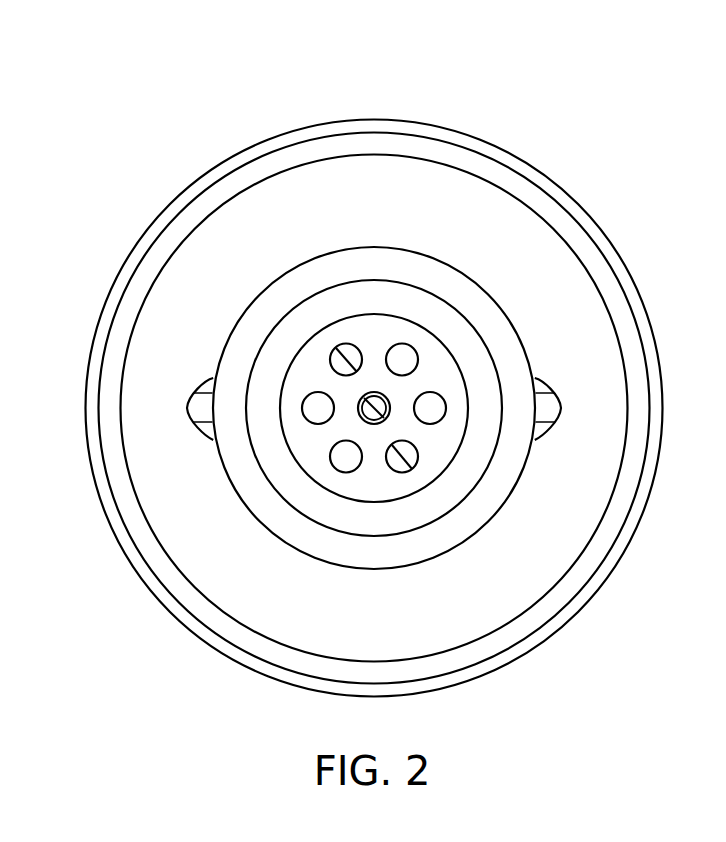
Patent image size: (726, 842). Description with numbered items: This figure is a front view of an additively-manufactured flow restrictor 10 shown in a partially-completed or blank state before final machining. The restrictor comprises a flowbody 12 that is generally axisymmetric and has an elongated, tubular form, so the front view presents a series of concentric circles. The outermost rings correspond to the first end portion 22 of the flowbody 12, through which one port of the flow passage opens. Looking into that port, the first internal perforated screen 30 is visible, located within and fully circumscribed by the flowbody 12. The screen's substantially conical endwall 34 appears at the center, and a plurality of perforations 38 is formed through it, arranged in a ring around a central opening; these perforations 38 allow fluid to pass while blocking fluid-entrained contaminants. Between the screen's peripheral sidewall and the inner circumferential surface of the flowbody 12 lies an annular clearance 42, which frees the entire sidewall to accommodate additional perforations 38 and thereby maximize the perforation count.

The additively-manufactured flow restrictor 10 is at (145, 132).
The flowbody 12 is at (515, 657).
The first end portion 22 is at (562, 249).
The first internal perforated screen 30 is at (405, 297).
The endwall 34 is at (310, 462).
The perforations 38 is at (512, 487).
The annular clearance 42 is at (443, 545).